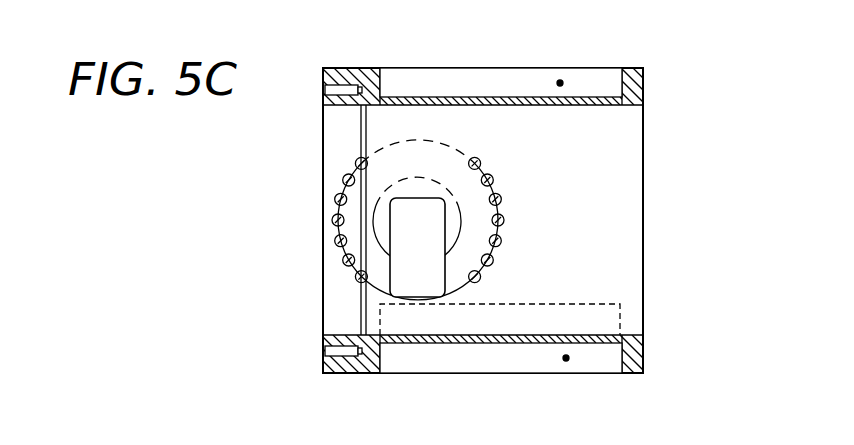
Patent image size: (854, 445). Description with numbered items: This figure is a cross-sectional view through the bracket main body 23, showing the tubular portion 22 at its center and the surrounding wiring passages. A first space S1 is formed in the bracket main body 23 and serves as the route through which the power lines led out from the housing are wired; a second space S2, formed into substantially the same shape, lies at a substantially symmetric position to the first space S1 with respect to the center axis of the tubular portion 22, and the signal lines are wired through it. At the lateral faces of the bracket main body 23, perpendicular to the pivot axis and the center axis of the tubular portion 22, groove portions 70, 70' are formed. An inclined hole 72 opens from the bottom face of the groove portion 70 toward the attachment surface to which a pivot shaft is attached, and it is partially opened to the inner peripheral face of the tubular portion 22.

The tubular portion 22 is at (610, 182).
The bracket main body 23 is at (323, 365).
The groove portion 70 is at (501, 390).
The groove portion 70' is at (501, 52).
The inclined hole 72 is at (406, 243).
The first space S1 is at (566, 358).
The second space S2 is at (560, 83).